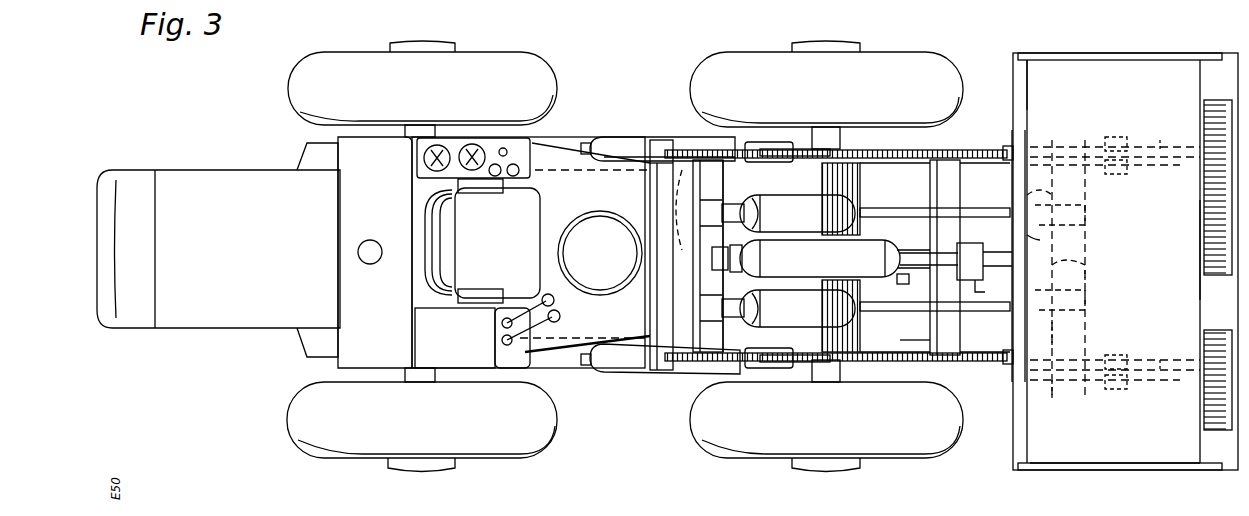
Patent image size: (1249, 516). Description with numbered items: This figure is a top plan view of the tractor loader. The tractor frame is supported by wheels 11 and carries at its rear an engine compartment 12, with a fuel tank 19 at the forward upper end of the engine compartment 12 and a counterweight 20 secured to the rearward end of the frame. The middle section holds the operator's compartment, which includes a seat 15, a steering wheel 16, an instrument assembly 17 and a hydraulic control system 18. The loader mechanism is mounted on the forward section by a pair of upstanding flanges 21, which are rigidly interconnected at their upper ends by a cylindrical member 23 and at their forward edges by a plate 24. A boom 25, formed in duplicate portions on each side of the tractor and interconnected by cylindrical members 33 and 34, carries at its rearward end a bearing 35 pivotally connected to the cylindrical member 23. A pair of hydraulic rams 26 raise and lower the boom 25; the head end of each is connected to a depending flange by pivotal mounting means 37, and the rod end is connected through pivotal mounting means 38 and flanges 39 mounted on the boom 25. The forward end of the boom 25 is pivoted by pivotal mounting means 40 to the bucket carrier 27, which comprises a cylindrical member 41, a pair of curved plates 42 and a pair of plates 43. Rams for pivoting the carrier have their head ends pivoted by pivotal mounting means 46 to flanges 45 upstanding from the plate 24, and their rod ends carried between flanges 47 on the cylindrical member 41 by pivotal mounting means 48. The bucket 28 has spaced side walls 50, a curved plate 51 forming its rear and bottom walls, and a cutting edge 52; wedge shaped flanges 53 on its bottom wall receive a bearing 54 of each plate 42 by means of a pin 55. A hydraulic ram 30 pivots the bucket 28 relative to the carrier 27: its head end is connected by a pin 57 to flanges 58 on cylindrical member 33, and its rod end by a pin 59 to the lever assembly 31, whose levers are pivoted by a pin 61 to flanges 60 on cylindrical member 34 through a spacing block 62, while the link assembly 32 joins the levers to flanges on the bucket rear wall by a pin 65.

The wheels 11 is at (318, 88).
The engine compartment 12 is at (212, 195).
The seat 15 is at (496, 248).
The steering wheel 16 is at (576, 292).
The instrument assembly 17 is at (535, 172).
The hydraulic control system 18 is at (525, 352).
The fuel tank 19 is at (360, 307).
The counterweight 20 is at (790, 210).
The flanges 21 is at (622, 172).
The cylindrical member 23 is at (648, 222).
The plate 24 is at (690, 252).
The boom 25 is at (908, 163).
The hydraulic rams 26 is at (618, 136).
The bucket carrier 27 is at (1055, 382).
The bucket 28 is at (1104, 452).
The hydraulic ram 30 is at (808, 268).
The lever assembly 31 is at (918, 262).
The link assembly 32 is at (988, 262).
The cylindrical member 33 is at (688, 360).
The cylindrical member 34 is at (925, 340).
The bearing 35 is at (661, 139).
The pivotal mounting means 37 is at (587, 141).
The pivotal mounting means 38 is at (754, 142).
The flanges 39 is at (780, 148).
The pivotal mounting means 40 is at (1006, 146).
The cylindrical member 41 is at (1088, 272).
The plates 42 is at (1066, 261).
The plates 43 is at (1040, 345).
The flanges 45 is at (682, 149).
The pivotal mounting means 46 is at (745, 208).
The flanges 47 is at (1088, 218).
The pivotal mounting means 48 is at (1040, 193).
The side walls 50 is at (1118, 58).
The curved plate 51 is at (1040, 100).
The cutting edge 52 is at (1205, 250).
The wedge shaped flanges 53 is at (1158, 136).
The bearing 54 is at (1125, 136).
The pin 55 is at (1105, 287).
The pin 57 is at (734, 258).
The flanges 58 is at (713, 258).
The pin 59 is at (897, 283).
The flanges 60 is at (965, 280).
The pin 61 is at (989, 288).
The spacing block 62 is at (958, 255).
The pin 65 is at (1042, 238).